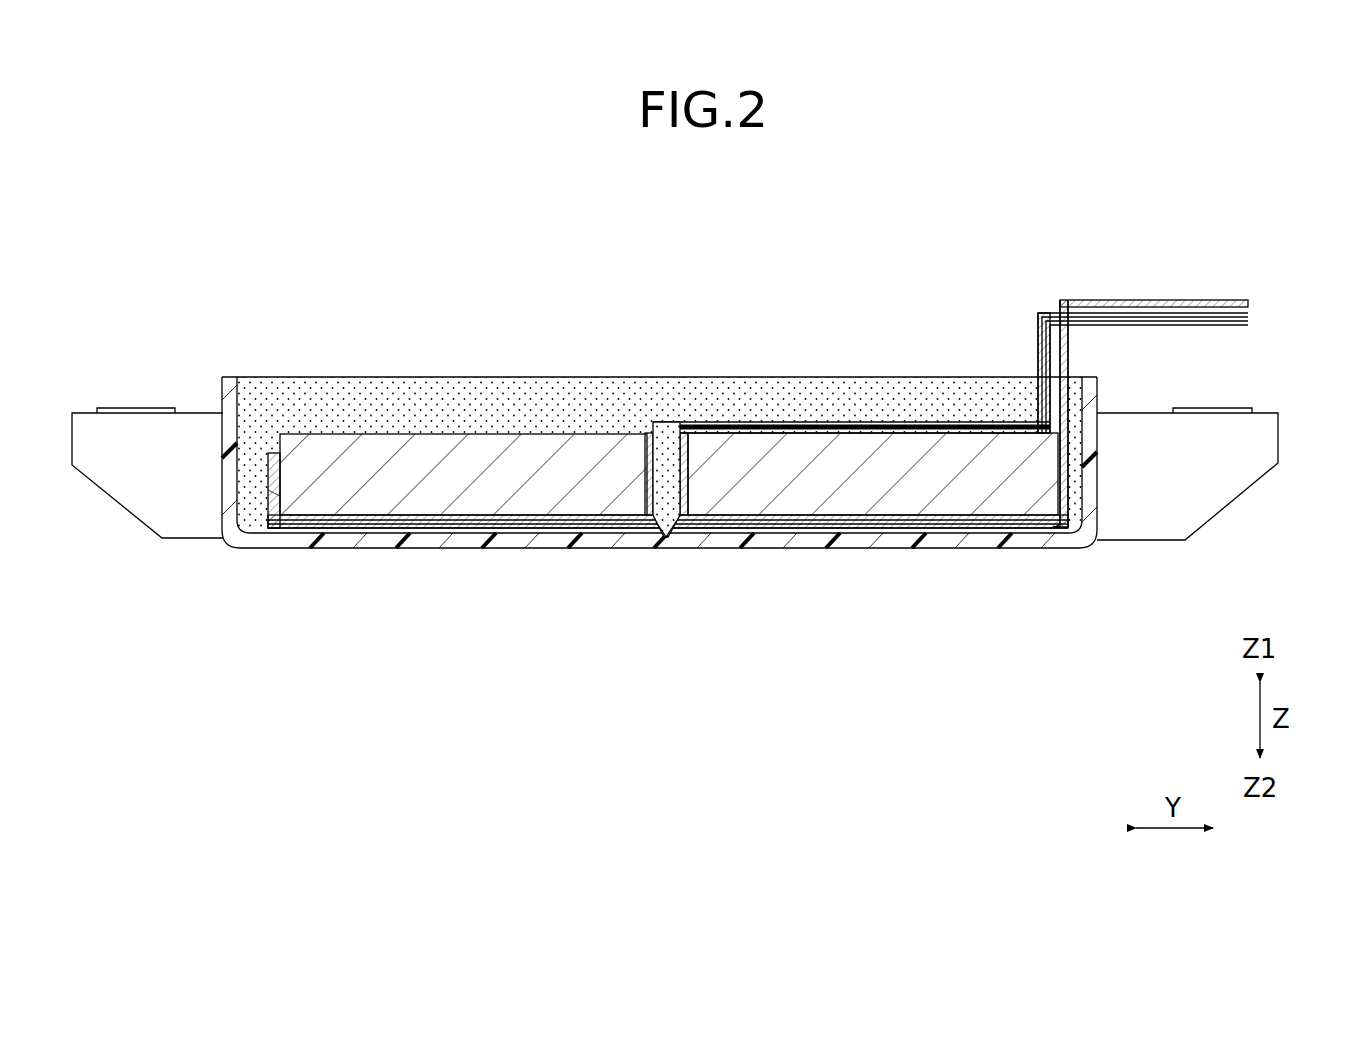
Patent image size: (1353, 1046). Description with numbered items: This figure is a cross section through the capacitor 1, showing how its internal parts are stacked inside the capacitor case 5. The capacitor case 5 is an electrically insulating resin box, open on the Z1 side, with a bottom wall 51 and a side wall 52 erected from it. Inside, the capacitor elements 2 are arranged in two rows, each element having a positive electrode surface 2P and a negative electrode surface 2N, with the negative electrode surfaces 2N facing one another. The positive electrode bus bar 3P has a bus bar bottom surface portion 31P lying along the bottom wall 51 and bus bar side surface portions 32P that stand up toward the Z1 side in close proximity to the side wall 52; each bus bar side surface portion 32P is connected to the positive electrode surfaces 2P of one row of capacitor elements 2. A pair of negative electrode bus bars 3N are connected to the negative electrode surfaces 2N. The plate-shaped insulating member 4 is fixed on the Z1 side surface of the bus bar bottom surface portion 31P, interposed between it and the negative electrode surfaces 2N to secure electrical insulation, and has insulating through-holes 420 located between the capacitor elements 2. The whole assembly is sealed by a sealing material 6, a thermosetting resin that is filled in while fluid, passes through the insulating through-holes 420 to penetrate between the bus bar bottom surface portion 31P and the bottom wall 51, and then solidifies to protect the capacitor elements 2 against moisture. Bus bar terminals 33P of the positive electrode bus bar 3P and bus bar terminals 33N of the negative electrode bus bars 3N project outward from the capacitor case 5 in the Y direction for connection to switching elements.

The capacitor 1 is at (1026, 203).
The capacitor element 2 is at (458, 453).
The positive electrode surface 2P is at (270, 453).
The negative electrode surface 2N is at (664, 547).
The negative electrode bus bar 3N is at (947, 420).
The positive electrode bus bar 3P is at (371, 521).
The insulating member 4 is at (700, 547).
The capacitor case 5 is at (232, 383).
The sealing material 6 is at (588, 405).
The bus bar bottom surface portion 31P is at (507, 530).
The bus bar side surface portion 32P is at (267, 493).
The bus bar terminal 33P is at (1228, 299).
The bus bar terminal 33N is at (1248, 324).
The bottom wall 51 is at (1090, 393).
The side wall 52 is at (233, 430).
The insulating through-hole 420 is at (656, 547).